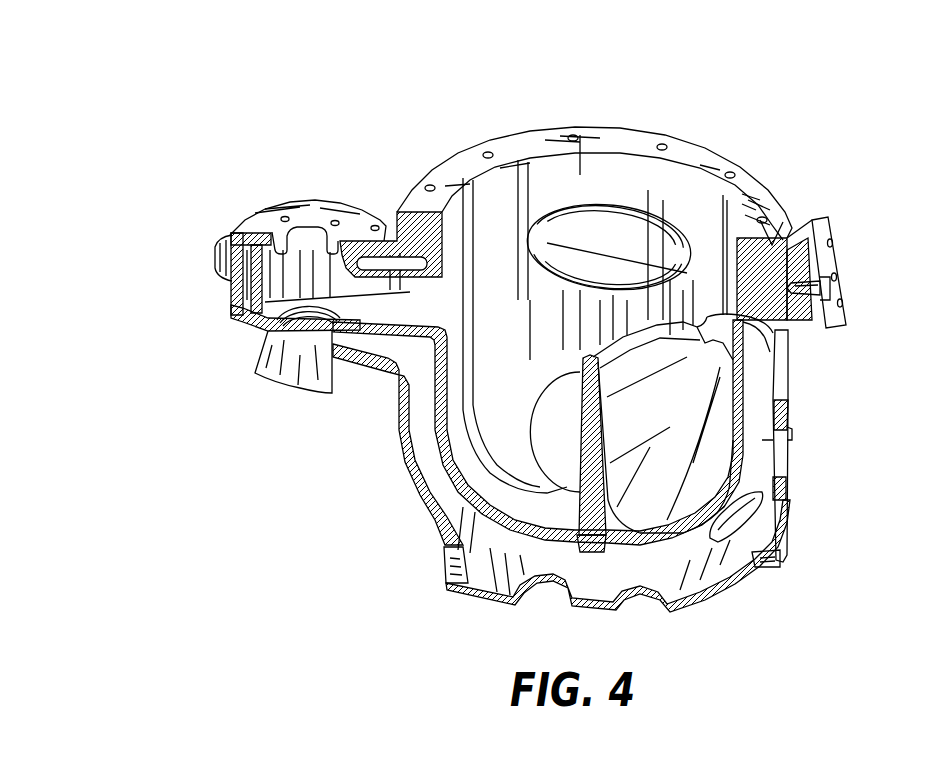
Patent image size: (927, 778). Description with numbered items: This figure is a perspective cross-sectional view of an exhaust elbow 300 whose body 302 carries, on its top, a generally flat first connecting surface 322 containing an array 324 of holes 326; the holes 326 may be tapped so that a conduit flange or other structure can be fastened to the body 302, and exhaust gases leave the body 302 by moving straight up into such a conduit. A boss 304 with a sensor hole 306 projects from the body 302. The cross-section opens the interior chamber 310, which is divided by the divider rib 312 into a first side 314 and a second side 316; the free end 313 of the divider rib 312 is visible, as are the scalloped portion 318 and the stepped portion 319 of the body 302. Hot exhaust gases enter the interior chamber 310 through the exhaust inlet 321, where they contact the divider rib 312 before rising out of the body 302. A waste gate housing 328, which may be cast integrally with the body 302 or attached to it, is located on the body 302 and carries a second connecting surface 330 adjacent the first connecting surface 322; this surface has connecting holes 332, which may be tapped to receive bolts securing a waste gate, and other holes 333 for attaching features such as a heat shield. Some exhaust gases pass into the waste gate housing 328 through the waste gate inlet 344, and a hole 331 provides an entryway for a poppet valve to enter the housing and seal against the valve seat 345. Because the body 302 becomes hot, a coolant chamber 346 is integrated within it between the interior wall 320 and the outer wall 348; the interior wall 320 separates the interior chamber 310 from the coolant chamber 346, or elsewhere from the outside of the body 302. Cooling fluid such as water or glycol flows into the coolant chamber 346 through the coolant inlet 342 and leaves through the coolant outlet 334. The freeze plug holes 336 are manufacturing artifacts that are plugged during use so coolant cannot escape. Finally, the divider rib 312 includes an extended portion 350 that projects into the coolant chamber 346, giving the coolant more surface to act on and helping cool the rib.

The exhaust elbow 300 is at (647, 92).
The body 302 is at (532, 183).
The boss 304 is at (830, 218).
The sensor hole 306 is at (832, 290).
The interior chamber 310 is at (637, 232).
The divider rib 312 is at (580, 506).
The free end 313 is at (628, 340).
The first side 314 is at (478, 442).
The second side 316 is at (683, 468).
The scalloped portion 318 is at (745, 318).
The stepped portion 319 is at (705, 315).
The interior wall 320 is at (745, 475).
The exhaust inlet 321 is at (557, 420).
The first connecting surface 322 is at (592, 137).
The array 324 is at (465, 132).
The holes 326 is at (663, 146).
The waste gate housing 328 is at (220, 237).
The second connecting surface 330 is at (298, 210).
The hole 331 is at (290, 258).
The connecting holes 332 is at (334, 220).
The other holes 333 is at (373, 225).
The coolant outlet 334 is at (218, 258).
The freeze plug holes 336 is at (791, 447).
The coolant inlet 342 is at (443, 578).
The waste gate inlet 344 is at (300, 353).
The valve seat 345 is at (300, 312).
The coolant chamber 346 is at (750, 515).
The outer wall 348 is at (770, 563).
The extended portion 350 is at (592, 552).